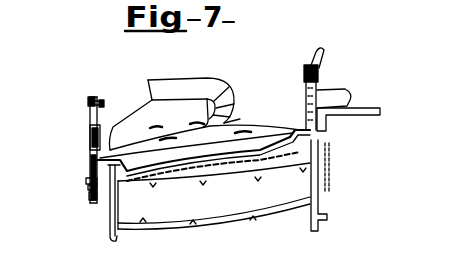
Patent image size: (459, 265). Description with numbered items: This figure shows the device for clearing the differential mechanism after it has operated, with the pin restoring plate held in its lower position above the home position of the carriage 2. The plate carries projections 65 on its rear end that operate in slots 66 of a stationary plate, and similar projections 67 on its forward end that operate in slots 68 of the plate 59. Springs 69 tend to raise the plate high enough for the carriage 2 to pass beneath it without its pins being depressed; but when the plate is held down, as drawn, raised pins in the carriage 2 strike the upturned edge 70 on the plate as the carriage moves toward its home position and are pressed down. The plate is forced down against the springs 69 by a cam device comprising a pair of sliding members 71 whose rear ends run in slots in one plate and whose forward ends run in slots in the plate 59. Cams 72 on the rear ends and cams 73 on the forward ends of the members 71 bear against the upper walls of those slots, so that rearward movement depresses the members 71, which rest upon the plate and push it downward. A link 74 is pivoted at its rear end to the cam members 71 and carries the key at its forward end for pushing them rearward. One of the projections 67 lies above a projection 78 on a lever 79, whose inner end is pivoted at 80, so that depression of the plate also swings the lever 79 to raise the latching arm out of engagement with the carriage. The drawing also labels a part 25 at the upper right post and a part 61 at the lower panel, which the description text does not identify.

The carriage 2 is at (110, 205).
The standard post 25 is at (314, 83).
The plate 59 is at (89, 117).
The panel 61 is at (177, 174).
The projections 65 is at (330, 143).
The slots 66 is at (323, 126).
The projections 67 is at (93, 160).
The slots 68 is at (97, 145).
The springs 69 is at (109, 104).
The upturned edge 70 is at (233, 168).
The sliding members 71 is at (231, 114).
The cams 72 is at (335, 96).
The cams 73 is at (113, 130).
The link 74 is at (164, 82).
The projection 78 is at (88, 182).
The lever 79 is at (92, 197).
The pivot 80 is at (94, 188).